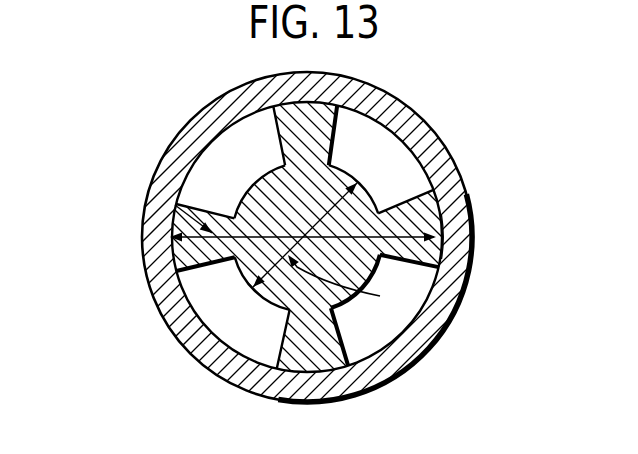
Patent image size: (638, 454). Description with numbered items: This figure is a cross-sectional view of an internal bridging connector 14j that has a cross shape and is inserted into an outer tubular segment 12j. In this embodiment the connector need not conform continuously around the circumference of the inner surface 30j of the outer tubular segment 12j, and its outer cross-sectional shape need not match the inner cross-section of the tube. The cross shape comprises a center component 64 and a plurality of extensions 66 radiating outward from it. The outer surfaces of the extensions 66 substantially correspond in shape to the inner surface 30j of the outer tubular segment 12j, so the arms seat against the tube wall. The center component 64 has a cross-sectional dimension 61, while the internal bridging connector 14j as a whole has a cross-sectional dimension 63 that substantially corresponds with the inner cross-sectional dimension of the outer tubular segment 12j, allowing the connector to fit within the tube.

The outer tubular segment 12j is at (378, 98).
The internal bridging connector 14j is at (343, 132).
The inner surface 30j is at (413, 160).
The cross-sectional dimension 61 is at (380, 296).
The cross-sectional dimension 63 is at (175, 205).
The center component 64 is at (270, 187).
The extensions 66 is at (187, 263).